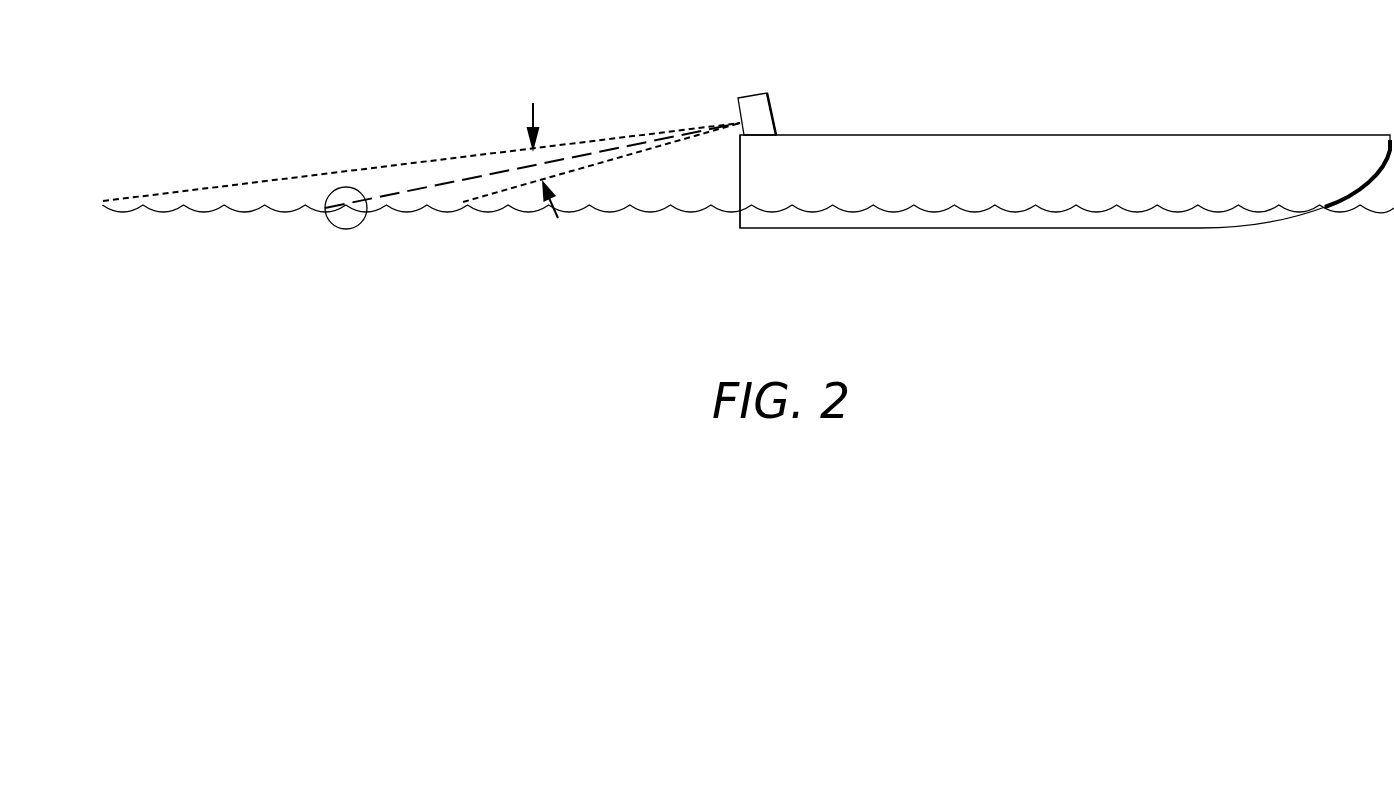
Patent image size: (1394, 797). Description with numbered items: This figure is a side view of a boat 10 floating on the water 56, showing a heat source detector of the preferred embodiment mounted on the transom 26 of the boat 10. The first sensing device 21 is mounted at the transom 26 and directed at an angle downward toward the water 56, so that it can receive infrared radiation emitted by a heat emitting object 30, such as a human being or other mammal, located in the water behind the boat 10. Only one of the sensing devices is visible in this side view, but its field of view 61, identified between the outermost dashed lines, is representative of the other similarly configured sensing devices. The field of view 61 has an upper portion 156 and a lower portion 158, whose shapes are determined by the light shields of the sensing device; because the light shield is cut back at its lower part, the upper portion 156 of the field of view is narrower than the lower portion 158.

The boat 10 is at (1310, 153).
The first sensing device 21 is at (752, 103).
The transom 26 is at (740, 178).
The heat emitting object 30 is at (347, 229).
The water 56 is at (594, 210).
The field of view 61 is at (536, 158).
The upper portion of the field of view 156 is at (434, 168).
The lower portion of the field of view 158 is at (488, 182).